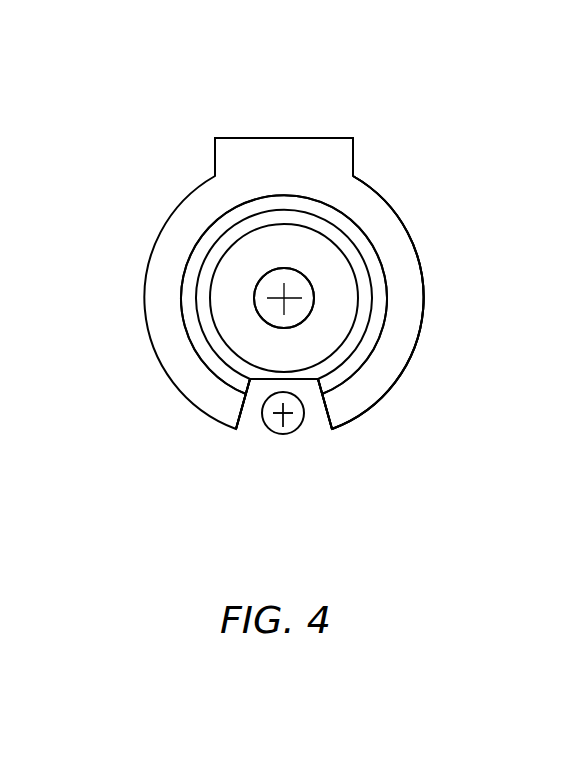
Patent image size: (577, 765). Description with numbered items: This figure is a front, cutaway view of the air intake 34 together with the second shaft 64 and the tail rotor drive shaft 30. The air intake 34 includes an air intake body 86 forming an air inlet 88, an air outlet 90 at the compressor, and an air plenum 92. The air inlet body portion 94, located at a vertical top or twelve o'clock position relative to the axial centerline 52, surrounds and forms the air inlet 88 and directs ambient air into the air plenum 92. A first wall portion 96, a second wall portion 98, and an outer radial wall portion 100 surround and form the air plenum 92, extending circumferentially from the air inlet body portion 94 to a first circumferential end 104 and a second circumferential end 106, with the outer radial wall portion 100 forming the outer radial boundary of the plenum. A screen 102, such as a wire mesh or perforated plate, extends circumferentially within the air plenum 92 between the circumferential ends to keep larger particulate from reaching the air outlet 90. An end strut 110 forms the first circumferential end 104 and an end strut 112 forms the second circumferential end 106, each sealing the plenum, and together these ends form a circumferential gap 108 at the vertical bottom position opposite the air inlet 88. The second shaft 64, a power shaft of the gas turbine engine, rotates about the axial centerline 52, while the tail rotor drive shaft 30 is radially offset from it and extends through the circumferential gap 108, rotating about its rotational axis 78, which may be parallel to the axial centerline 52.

The air intake 34 is at (408, 118).
The air intake body 86 is at (392, 198).
The air inlet 88 is at (272, 152).
The air inlet body portion 94 is at (353, 155).
The screen 102 is at (372, 242).
The air outlet 90 is at (357, 272).
The air plenum 92 is at (408, 300).
The outer radial wall portion 100 is at (413, 353).
The second wall portion 98 is at (193, 283).
The first wall portion 96 is at (233, 320).
The axial centerline 52 is at (289, 287).
The second shaft 64 is at (265, 287).
The circumferential gap 108 is at (310, 447).
The first circumferential end 104 is at (234, 418).
The end strut 110 is at (245, 410).
The second circumferential end 106 is at (333, 426).
The end strut 112 is at (317, 400).
The rotational axis 78 is at (273, 423).
The tail rotor drive shaft 30 is at (285, 423).